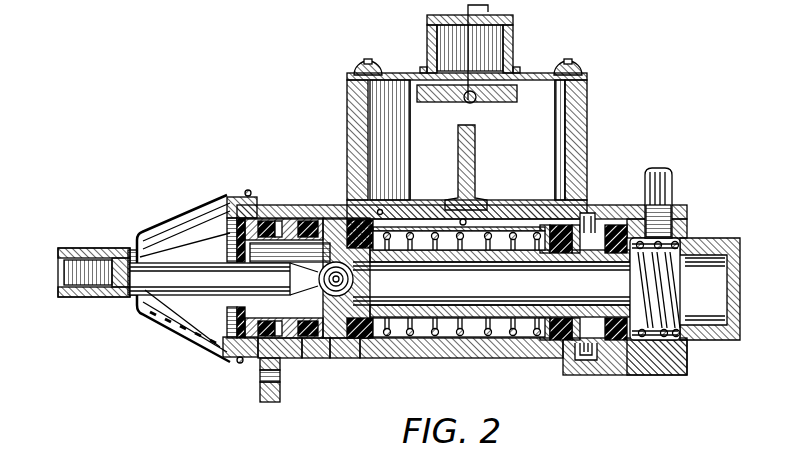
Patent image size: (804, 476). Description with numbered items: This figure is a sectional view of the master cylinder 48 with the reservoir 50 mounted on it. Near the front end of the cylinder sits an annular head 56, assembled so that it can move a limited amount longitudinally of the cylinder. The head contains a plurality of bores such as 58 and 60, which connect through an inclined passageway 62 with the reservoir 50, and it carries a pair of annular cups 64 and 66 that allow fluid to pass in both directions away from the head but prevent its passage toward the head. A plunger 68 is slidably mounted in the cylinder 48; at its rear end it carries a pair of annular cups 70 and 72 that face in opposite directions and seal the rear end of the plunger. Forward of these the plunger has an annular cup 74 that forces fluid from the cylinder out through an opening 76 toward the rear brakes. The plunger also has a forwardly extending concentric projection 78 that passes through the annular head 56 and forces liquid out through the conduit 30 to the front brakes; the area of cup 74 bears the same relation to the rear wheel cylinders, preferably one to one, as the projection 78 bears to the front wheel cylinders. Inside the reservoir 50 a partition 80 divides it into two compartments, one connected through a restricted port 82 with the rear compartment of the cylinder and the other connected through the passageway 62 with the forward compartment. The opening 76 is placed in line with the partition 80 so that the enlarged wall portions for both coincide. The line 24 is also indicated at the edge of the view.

The line 24 is at (705, 3).
The conduit 30 is at (675, 178).
The master cylinder 48 is at (413, 350).
The reservoir 50 is at (585, 125).
The annular head 56 is at (598, 345).
The bore 58 is at (607, 205).
The bore 60 is at (625, 210).
The inclined passageway 62 is at (588, 200).
The annular cup 64 is at (553, 343).
The annular cup 66 is at (622, 345).
The plunger 68 is at (332, 357).
The annular cup 70 is at (255, 357).
The annular cup 72 is at (298, 357).
The annular cup 74 is at (360, 357).
The opening 76 is at (466, 220).
The concentric projection 78 is at (517, 312).
The partition 80 is at (470, 160).
The restricted port 82 is at (382, 212).